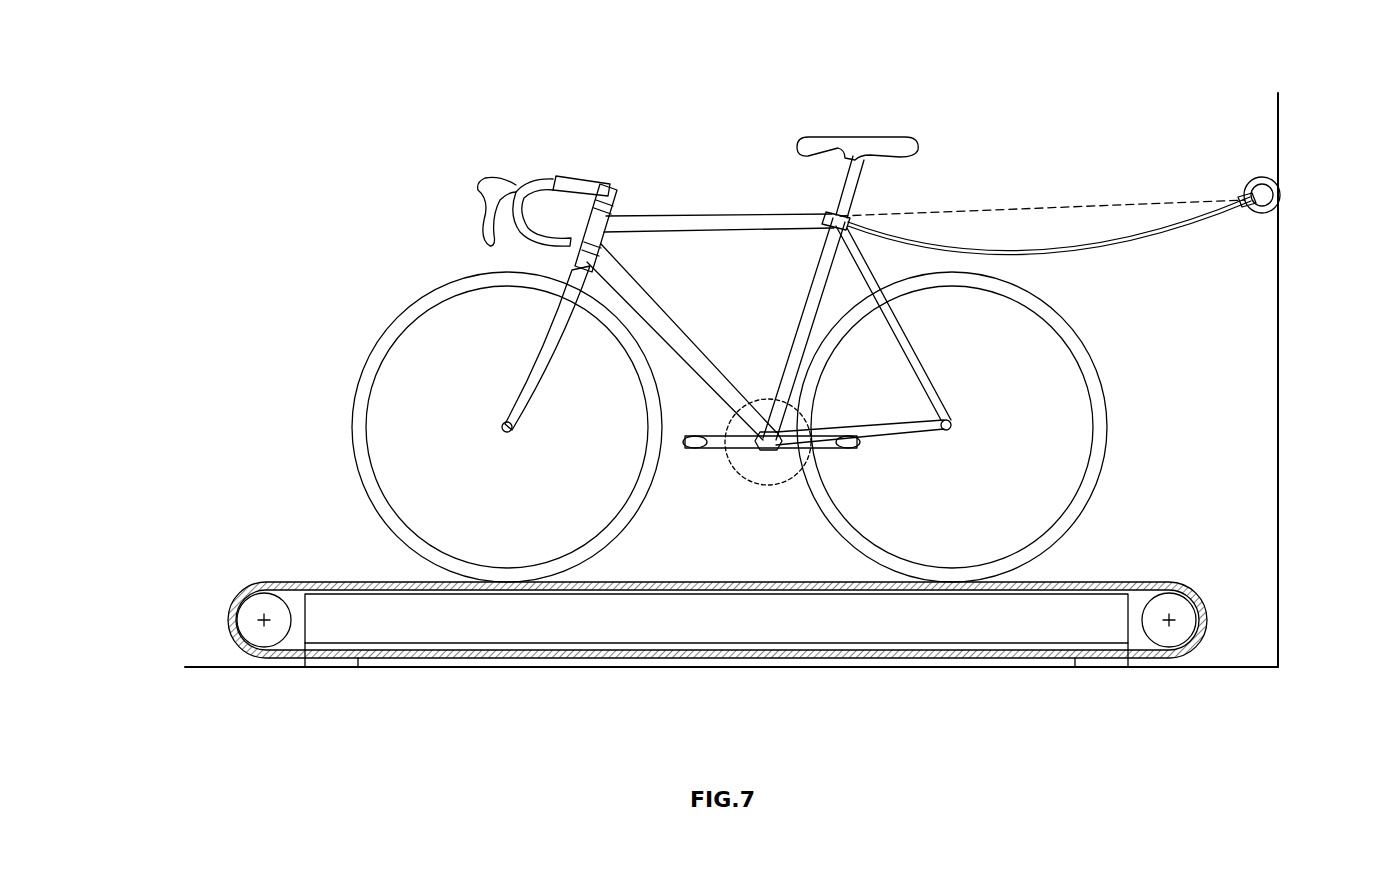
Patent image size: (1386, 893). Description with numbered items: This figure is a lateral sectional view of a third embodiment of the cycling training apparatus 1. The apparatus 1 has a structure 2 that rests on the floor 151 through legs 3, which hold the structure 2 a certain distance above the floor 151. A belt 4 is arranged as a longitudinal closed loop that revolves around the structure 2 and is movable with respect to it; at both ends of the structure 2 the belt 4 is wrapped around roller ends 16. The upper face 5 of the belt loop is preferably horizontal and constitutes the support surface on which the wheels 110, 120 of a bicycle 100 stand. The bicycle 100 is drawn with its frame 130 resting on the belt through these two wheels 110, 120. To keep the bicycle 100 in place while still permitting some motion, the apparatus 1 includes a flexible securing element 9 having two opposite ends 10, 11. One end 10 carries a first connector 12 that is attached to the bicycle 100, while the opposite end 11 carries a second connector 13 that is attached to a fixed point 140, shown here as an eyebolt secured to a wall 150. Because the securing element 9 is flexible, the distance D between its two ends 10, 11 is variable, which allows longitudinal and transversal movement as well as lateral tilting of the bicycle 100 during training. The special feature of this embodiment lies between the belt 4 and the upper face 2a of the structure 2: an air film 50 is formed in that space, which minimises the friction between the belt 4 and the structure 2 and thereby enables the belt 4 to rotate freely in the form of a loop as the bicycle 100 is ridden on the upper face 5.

The cycling training apparatus 1 is at (220, 375).
The structure 2 is at (505, 625).
The upper face of the structure 2a is at (350, 585).
The legs 3 is at (333, 665).
The belt 4 is at (717, 568).
The upper face of the belt loop 5 is at (1108, 590).
The securing element 9 is at (1020, 245).
The end of the securing element 10 is at (862, 196).
The opposite end of the securing element 11 is at (1266, 222).
The first connector 12 is at (818, 212).
The second connector 13 is at (1240, 195).
The roller ends 16 is at (240, 610).
The air film 50 is at (680, 585).
The bicycle 100 is at (445, 255).
The front wheel 110 is at (378, 330).
The rear wheel 120 is at (1085, 330).
The bicycle frame 130 is at (720, 200).
The fixed point 140 is at (1255, 178).
The wall 150 is at (1278, 403).
The floor 151 is at (190, 660).
The distance between the ends D is at (1042, 199).